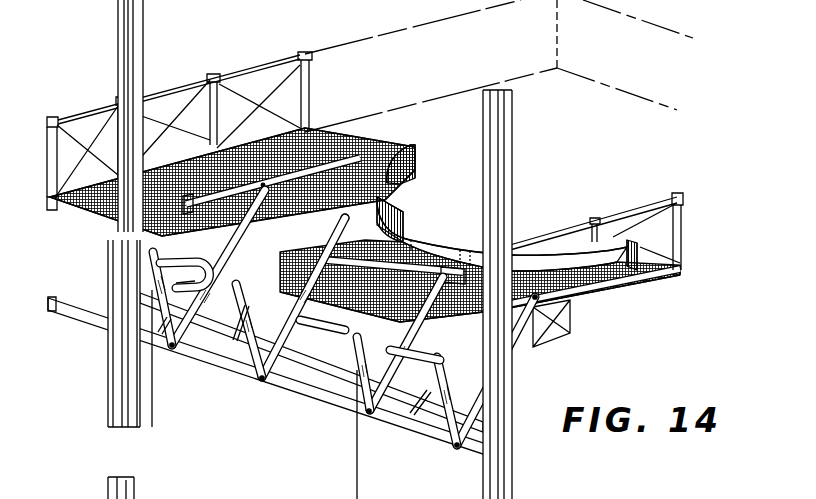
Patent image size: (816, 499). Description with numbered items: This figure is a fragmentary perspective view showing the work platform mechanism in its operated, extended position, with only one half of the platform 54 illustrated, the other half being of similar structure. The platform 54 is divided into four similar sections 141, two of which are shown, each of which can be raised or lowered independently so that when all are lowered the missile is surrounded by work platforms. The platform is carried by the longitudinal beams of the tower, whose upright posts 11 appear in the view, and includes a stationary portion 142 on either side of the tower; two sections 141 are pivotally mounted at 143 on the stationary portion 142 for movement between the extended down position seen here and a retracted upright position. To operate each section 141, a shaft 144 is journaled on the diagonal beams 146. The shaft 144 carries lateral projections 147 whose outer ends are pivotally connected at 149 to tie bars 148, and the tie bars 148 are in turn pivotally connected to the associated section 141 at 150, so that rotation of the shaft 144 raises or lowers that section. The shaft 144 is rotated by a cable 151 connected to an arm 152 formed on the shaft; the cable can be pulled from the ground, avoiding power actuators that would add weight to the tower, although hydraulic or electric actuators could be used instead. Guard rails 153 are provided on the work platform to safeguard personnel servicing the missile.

The vertical post 11 is at (137, 43).
The platform 54 is at (365, 143).
The section 141 is at (334, 147).
The stationary portion 142 is at (102, 200).
The pivotal mounting 143 is at (147, 167).
The shaft 144 is at (175, 270).
The diagonal beam 146 is at (267, 294).
The lateral projection 147 is at (250, 340).
The tie bar 148 is at (272, 211).
The pivotal connection 149 is at (175, 353).
The pivotal connection 150 is at (263, 185).
The cable 151 is at (153, 423).
The arm 152 is at (177, 260).
The guard rail 153 is at (279, 57).